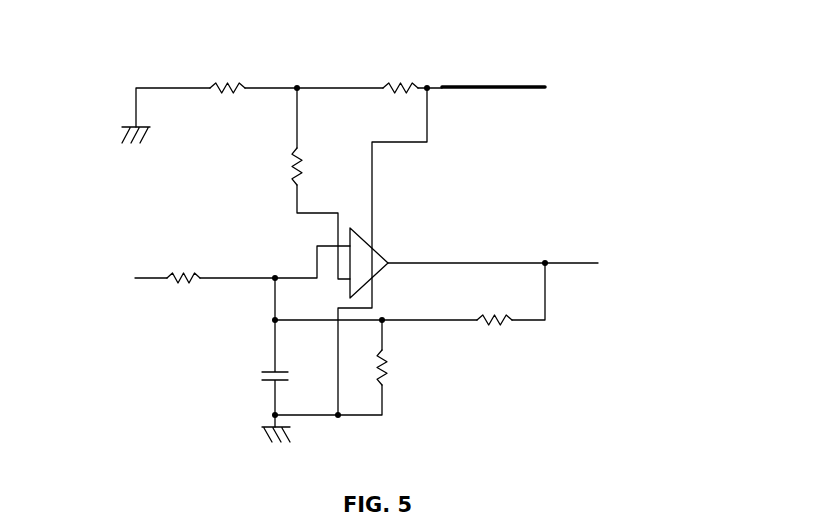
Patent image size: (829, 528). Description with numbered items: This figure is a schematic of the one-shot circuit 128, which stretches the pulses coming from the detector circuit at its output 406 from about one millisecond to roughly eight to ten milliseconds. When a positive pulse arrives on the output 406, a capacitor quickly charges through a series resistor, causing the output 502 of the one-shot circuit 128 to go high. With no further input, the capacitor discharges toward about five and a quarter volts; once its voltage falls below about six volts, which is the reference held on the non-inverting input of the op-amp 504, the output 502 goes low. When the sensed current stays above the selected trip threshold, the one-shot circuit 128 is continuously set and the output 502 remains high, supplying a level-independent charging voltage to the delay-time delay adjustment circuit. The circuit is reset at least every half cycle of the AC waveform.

The one-shot circuit 128 is at (134, 24).
The output of the detector circuit 406 is at (136, 277).
The op-amp 504 is at (377, 252).
The output of the one-shot circuit 502 is at (545, 262).